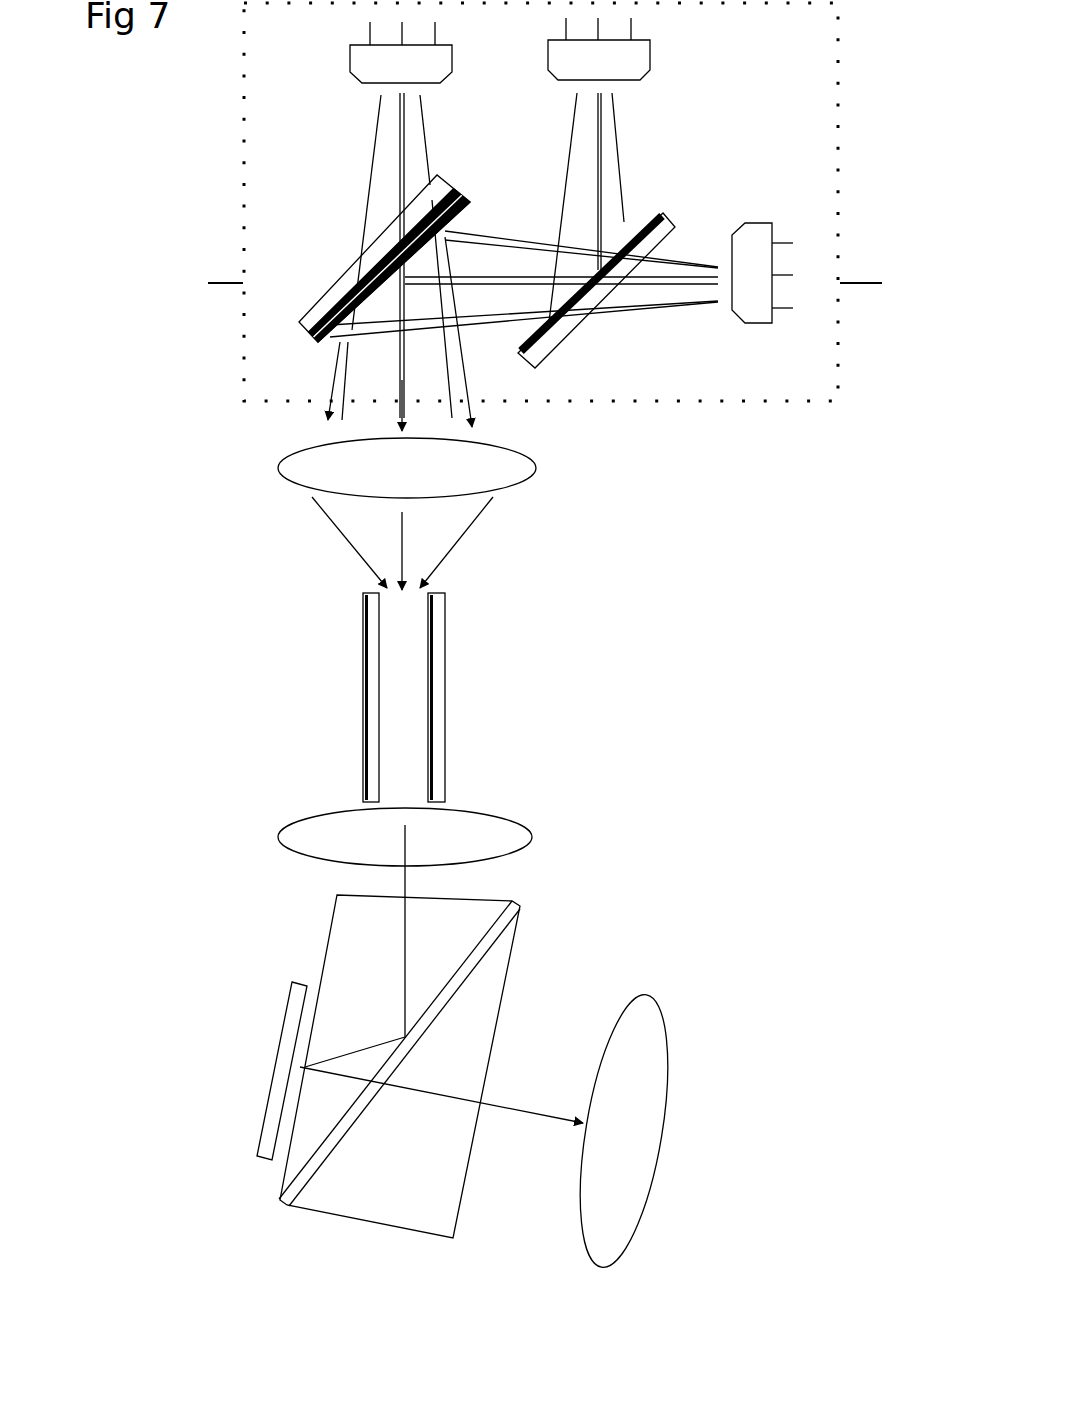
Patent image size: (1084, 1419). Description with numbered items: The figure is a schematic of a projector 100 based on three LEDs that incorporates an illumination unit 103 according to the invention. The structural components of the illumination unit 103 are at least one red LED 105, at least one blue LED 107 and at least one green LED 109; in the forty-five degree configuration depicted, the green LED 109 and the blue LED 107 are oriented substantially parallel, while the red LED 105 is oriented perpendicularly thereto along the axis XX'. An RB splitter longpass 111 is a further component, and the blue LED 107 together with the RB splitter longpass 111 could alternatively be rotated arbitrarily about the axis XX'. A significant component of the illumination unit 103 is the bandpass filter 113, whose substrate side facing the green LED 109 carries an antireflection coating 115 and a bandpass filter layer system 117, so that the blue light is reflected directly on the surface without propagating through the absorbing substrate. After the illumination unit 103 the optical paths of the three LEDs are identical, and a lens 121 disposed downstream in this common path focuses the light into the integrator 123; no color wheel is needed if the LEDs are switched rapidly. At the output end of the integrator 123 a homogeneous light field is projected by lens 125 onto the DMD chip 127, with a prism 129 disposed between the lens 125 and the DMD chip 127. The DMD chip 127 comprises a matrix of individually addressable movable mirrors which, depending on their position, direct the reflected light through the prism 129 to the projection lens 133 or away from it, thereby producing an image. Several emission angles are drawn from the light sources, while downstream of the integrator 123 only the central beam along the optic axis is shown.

The projector 100 is at (800, 552).
The illumination unit 103 is at (800, 155).
The red LED 105 is at (748, 325).
The blue LED 107 is at (650, 57).
The green LED 109 is at (350, 70).
The RB splitter longpass 111 is at (577, 332).
The bandpass filter 113 is at (332, 255).
The antireflection coating 115 is at (372, 233).
The bandpass filter layer system 117 is at (455, 195).
The lens 121 is at (293, 483).
The integrator 123 is at (445, 640).
The lens 125 is at (517, 827).
The DMD chip 127 is at (265, 1105).
The prism 129 is at (363, 1222).
The projection lens 133 is at (660, 1005).